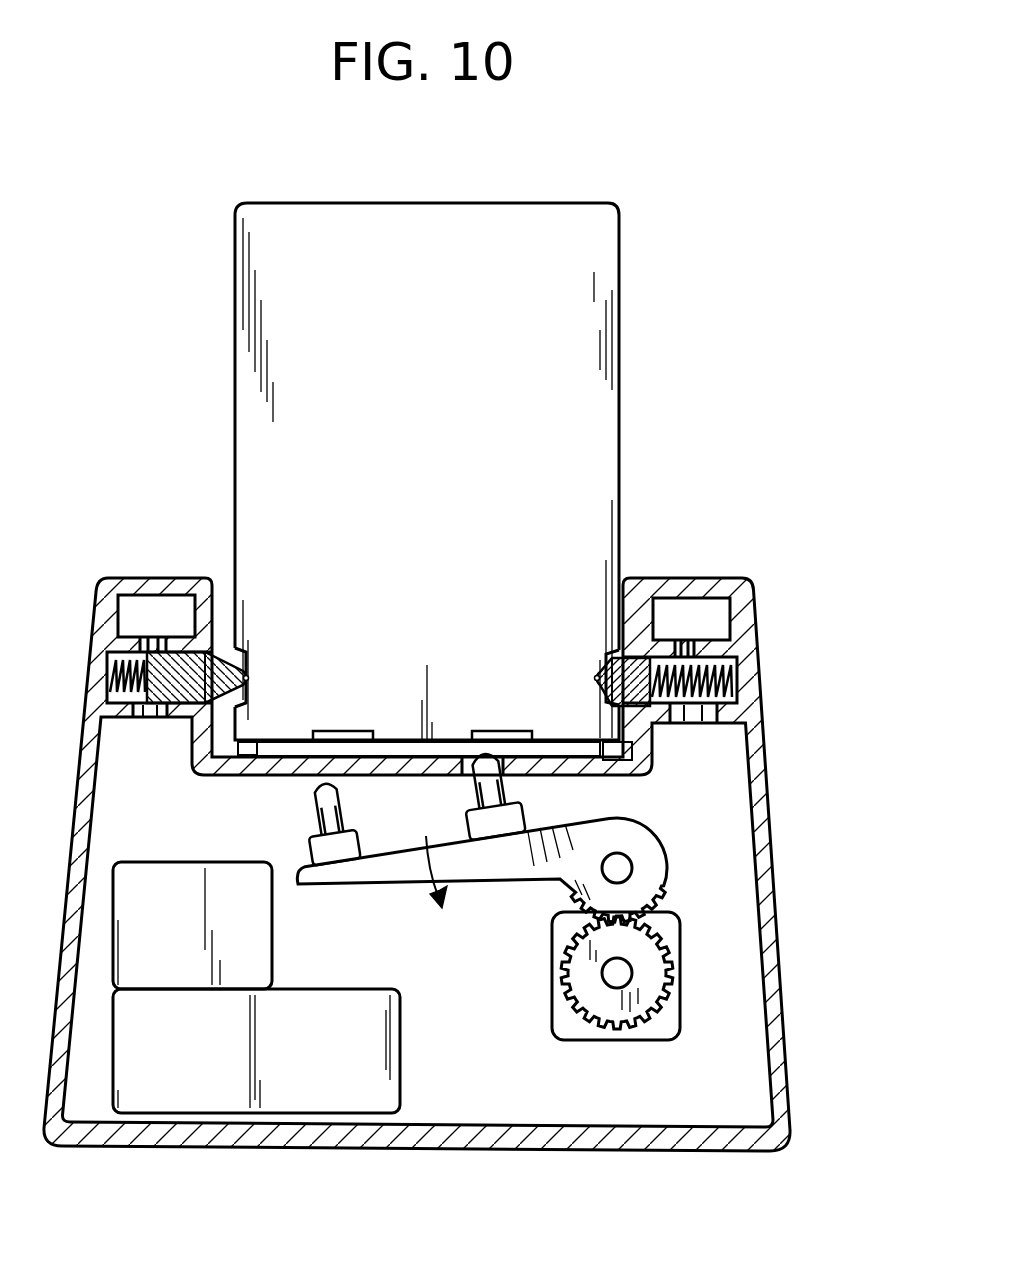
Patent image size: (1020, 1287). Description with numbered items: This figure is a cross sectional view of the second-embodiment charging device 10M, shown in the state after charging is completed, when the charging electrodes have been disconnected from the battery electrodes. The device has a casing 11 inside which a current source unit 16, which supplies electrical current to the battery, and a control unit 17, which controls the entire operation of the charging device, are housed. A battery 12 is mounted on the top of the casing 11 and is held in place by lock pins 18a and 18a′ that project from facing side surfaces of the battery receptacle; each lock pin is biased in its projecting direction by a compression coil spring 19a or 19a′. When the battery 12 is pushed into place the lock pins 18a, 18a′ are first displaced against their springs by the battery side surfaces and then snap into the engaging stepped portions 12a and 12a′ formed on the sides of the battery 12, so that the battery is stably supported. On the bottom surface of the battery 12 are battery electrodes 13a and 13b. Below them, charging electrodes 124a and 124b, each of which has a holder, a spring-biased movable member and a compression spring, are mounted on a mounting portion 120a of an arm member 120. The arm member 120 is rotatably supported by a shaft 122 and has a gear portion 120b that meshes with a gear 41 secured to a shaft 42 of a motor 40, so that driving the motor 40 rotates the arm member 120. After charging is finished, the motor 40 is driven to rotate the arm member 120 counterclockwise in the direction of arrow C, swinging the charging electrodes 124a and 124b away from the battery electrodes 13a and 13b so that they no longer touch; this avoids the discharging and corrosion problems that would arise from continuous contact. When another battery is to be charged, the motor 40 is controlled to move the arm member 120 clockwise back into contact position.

The charging device 10M is at (798, 524).
The casing 11 is at (765, 806).
The battery 12 is at (605, 274).
The engaging stepped portion 12a is at (247, 655).
The engaging stepped portion 12a′ is at (596, 672).
The battery electrode 13a is at (365, 730).
The battery electrode 13b is at (490, 730).
The current source unit 16 is at (167, 884).
The control unit 17 is at (388, 1087).
The lock pin 18a is at (612, 698).
The lock pin 18a′ is at (243, 703).
The compression coil spring 19a is at (708, 703).
The compression coil spring 19a′ is at (140, 720).
The motor 40 is at (667, 1017).
The gear 41 is at (563, 997).
The shaft 42 is at (617, 988).
The arm member 120 is at (525, 853).
The mounting portion 120a is at (403, 857).
The gear portion 120b is at (690, 913).
The shaft 122 is at (589, 830).
The charging electrode 124a is at (317, 803).
The charging electrode 124b is at (493, 842).
The arrow C is at (440, 894).